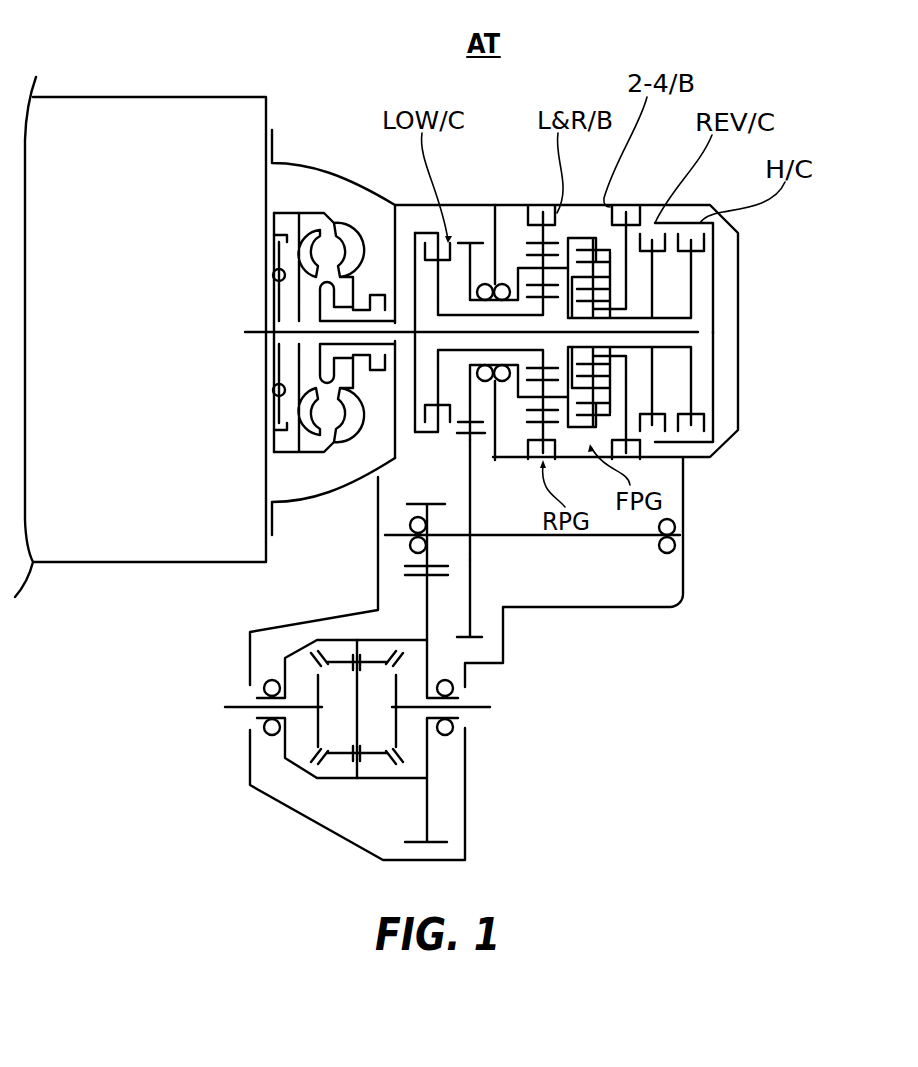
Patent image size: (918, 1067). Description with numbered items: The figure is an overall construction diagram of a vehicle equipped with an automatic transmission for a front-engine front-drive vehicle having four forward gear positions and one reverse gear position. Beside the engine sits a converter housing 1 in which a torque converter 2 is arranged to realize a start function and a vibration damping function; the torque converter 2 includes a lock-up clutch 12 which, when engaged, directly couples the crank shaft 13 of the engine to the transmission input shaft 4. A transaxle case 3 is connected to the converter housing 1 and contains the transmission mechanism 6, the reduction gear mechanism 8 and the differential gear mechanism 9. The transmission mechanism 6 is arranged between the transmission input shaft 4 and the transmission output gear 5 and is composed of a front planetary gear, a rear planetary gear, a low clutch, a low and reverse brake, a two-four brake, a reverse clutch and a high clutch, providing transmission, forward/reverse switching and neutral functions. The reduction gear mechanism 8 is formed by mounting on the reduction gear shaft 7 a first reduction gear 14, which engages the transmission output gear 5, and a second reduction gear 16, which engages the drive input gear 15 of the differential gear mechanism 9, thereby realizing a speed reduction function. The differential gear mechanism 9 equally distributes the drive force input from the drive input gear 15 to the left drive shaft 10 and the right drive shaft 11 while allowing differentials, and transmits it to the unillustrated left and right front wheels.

The converter housing 1 is at (343, 176).
The torque converter 2 is at (297, 254).
The transaxle case 3 is at (740, 363).
The transmission input shaft 4 is at (698, 331).
The transmission output gear 5 is at (460, 432).
The transmission mechanism 6 is at (508, 241).
The reduction gear shaft 7 is at (600, 536).
The reduction gear mechanism 8 is at (482, 594).
The differential gear mechanism 9 is at (338, 784).
The left drive shaft 10 is at (226, 707).
The right drive shaft 11 is at (490, 707).
The lock-up clutch 12 is at (273, 222).
The crank shaft 13 is at (262, 314).
The first reduction gear 14 is at (471, 510).
The drive input gear 15 is at (443, 576).
The second reduction gear 16 is at (438, 502).